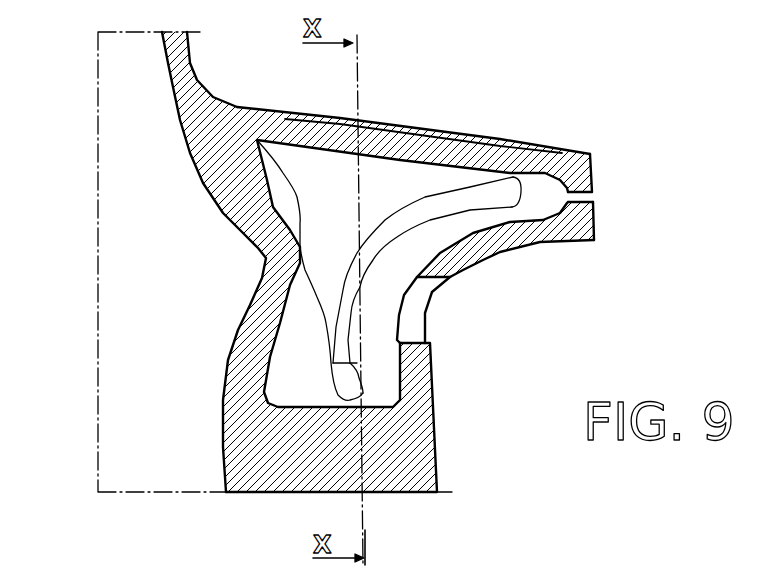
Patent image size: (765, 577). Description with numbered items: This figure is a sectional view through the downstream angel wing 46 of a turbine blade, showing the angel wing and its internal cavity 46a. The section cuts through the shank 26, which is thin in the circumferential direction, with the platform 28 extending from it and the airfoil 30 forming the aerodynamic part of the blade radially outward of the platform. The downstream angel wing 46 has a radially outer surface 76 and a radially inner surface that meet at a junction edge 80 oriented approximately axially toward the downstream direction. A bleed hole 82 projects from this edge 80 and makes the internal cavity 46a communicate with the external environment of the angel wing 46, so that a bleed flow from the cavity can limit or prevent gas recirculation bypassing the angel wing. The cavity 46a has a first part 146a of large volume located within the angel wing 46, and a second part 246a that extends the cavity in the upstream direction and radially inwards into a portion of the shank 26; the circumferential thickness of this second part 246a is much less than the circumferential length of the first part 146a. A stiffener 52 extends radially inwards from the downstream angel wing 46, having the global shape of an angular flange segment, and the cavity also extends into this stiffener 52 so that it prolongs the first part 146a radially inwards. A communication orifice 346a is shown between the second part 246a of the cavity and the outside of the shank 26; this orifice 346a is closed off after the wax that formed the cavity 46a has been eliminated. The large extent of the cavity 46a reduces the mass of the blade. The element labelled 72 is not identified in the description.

The shank 26 is at (160, 380).
The platform 28 is at (395, 130).
The airfoil 30 is at (167, 62).
The downstream angel wing 46 is at (565, 164).
The internal cavity 46a is at (327, 177).
The stiffener 52 is at (418, 450).
The rib 72 is at (540, 244).
The radially outer surface 76 is at (477, 141).
The junction edge 80 is at (597, 228).
The bleed hole 82 is at (592, 197).
The first part of the cavity 146a is at (472, 193).
The second part of the cavity 246a is at (290, 368).
The communication orifice 346a is at (410, 328).